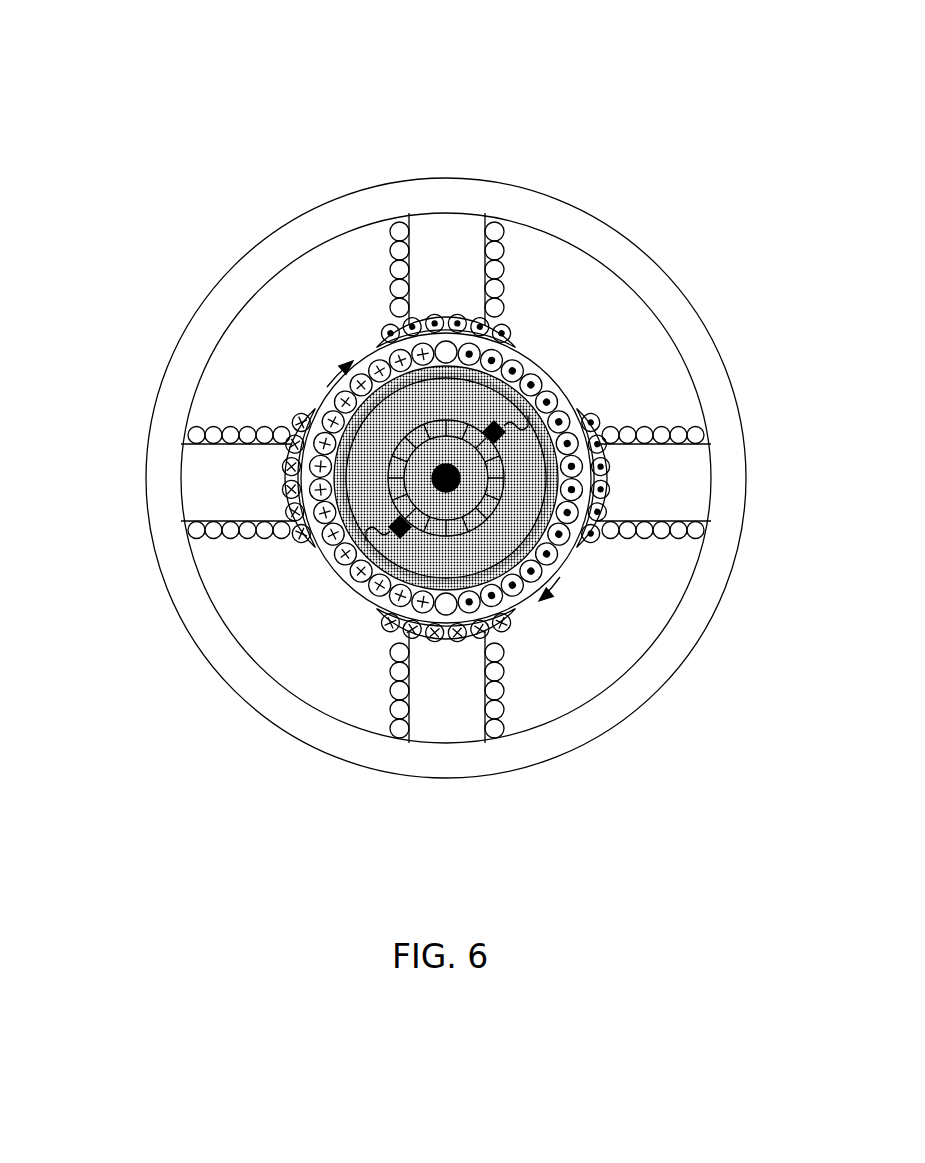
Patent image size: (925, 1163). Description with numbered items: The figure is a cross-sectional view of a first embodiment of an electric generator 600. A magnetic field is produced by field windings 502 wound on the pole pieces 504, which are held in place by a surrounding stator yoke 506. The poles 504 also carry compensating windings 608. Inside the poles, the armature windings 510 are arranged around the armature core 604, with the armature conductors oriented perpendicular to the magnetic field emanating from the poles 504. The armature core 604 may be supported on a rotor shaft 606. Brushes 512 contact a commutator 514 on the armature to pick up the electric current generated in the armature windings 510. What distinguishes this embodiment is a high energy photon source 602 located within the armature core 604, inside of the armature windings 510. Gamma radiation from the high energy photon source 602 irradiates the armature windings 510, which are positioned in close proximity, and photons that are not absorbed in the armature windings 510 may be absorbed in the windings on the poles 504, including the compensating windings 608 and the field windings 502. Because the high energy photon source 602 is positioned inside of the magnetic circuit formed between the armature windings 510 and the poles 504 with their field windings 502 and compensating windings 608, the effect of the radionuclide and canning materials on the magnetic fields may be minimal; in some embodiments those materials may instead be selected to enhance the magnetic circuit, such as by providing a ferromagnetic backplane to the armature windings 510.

The electric generator 600 is at (106, 124).
The field windings 502 is at (215, 420).
The pole pieces 504 is at (437, 280).
The stator yoke 506 is at (157, 535).
The armature windings 510 is at (320, 564).
The brushes 512 is at (415, 545).
The commutator 514 is at (454, 421).
The high energy photon source 602 is at (495, 357).
The armature core 604 is at (572, 397).
The rotor shaft 606 is at (463, 492).
The compensating windings 608 is at (372, 629).